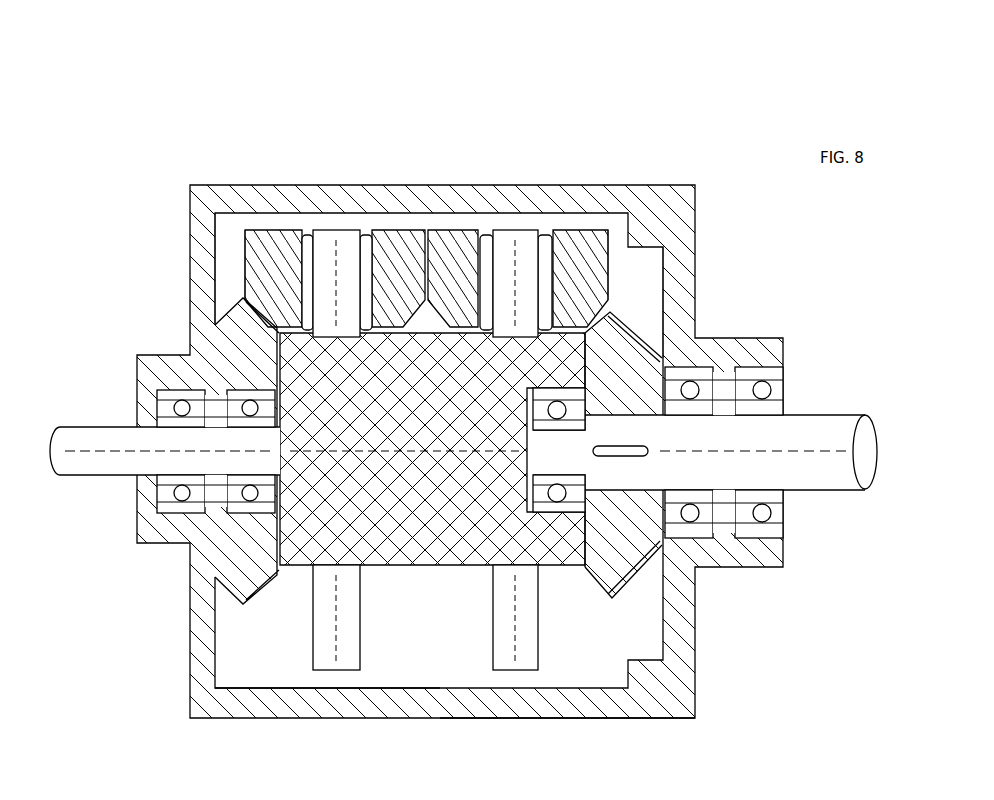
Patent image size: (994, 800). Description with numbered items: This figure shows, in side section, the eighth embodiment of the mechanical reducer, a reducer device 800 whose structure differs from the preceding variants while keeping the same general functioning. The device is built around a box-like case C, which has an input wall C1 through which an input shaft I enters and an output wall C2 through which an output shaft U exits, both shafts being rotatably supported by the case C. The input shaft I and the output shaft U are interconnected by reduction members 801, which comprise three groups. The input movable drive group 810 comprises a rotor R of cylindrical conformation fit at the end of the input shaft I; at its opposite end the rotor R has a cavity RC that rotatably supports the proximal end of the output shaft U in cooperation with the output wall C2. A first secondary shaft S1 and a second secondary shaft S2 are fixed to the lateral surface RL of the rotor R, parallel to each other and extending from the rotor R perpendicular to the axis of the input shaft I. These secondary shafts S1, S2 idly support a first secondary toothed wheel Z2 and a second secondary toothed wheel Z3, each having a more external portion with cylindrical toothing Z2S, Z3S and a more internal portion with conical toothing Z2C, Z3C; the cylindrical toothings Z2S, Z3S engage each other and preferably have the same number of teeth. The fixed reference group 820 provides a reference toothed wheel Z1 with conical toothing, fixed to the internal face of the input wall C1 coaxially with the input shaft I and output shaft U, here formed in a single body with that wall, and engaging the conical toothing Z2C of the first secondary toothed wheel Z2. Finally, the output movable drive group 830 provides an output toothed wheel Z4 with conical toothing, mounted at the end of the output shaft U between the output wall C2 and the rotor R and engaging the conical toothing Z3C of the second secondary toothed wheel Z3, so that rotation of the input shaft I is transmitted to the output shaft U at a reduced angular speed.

The reducer device 800 is at (466, 390).
The reduction members 801 is at (703, 718).
The input movable drive group 810 is at (285, 627).
The fixed reference group 820 is at (271, 390).
The output movable drive group 830 is at (616, 387).
The box-like case C is at (448, 463).
The input wall C1 is at (195, 637).
The output wall C2 is at (693, 585).
The reference toothed wheel Z1 is at (213, 345).
The first secondary toothed wheel Z2 is at (292, 265).
The second secondary toothed wheel Z3 is at (448, 285).
The output toothed wheel Z4 is at (640, 345).
The first secondary shaft S1 is at (343, 250).
The second secondary shaft S2 is at (515, 240).
The cylindrical toothing of first secondary toothed wheel Z2S is at (285, 240).
The cylindrical toothing of second secondary toothed wheel Z3S is at (590, 250).
The conical toothing of first secondary toothed wheel Z2C is at (213, 280).
The conical toothing of second secondary toothed wheel Z3C is at (613, 293).
The rotor R is at (356, 547).
The lateral surface of the rotor RL is at (407, 565).
The cavity of the rotor RC is at (563, 565).
The input shaft I is at (127, 443).
The output shaft U is at (793, 437).